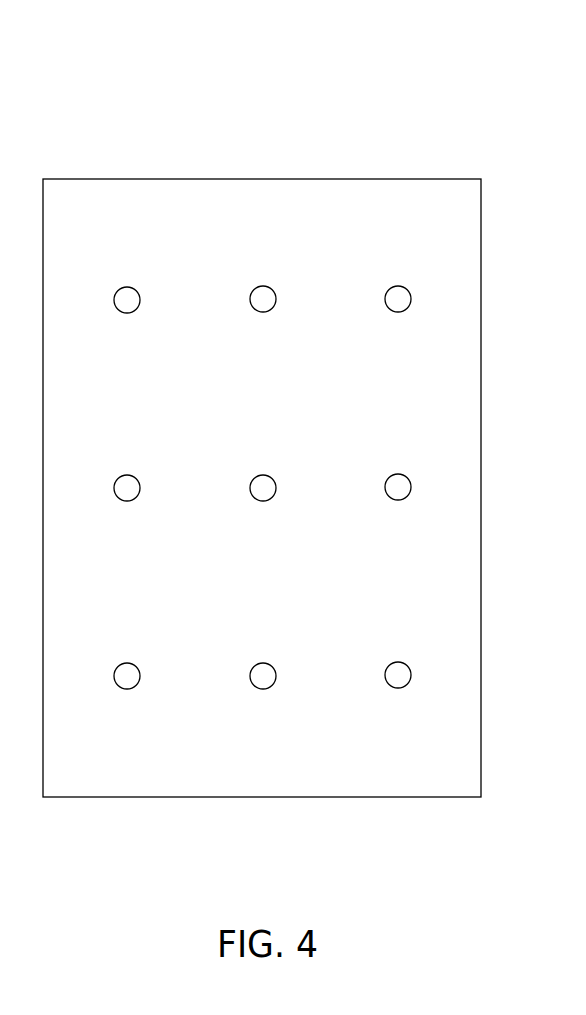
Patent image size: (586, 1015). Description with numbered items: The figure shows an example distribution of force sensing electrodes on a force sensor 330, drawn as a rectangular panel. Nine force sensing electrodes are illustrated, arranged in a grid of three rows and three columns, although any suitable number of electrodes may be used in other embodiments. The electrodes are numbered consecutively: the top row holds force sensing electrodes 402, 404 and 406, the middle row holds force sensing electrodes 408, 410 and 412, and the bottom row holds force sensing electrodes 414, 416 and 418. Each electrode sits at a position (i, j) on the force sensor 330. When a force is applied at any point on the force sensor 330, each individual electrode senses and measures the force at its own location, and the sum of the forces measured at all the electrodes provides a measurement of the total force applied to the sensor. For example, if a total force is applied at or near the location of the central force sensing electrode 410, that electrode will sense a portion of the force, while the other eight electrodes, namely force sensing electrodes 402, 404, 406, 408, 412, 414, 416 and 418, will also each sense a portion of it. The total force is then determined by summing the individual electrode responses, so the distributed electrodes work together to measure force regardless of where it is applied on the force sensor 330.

The force sensor 330 is at (430, 94).
The force sensing electrode 402 is at (136, 290).
The force sensing electrode 404 is at (272, 289).
The force sensing electrode 406 is at (407, 289).
The force sensing electrode 408 is at (136, 478).
The force sensing electrode 410 is at (272, 478).
The force sensing electrode 412 is at (407, 477).
The force sensing electrode 414 is at (136, 666).
The force sensing electrode 416 is at (272, 666).
The force sensing electrode 418 is at (407, 665).